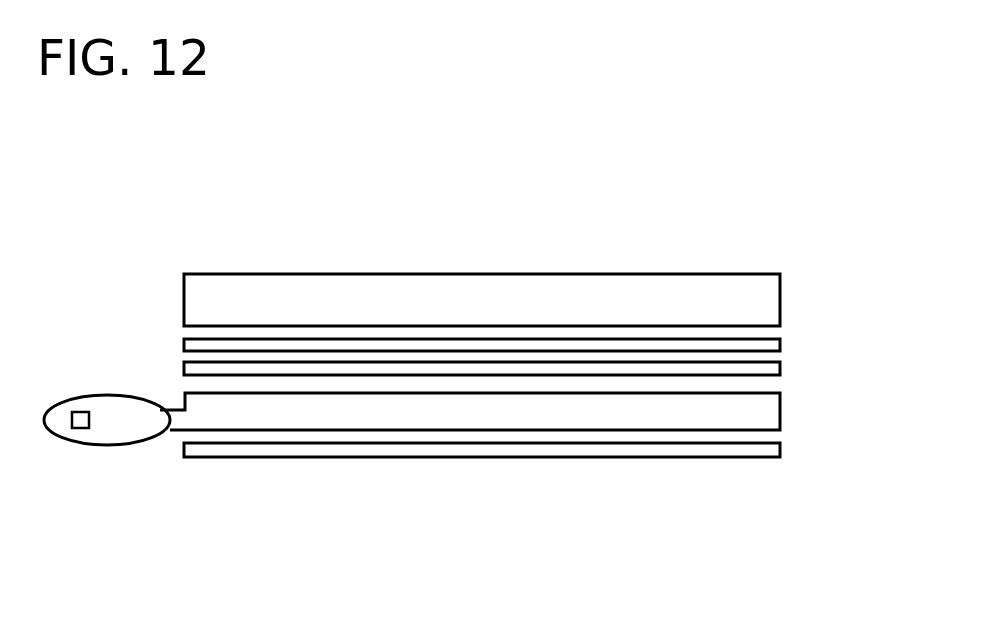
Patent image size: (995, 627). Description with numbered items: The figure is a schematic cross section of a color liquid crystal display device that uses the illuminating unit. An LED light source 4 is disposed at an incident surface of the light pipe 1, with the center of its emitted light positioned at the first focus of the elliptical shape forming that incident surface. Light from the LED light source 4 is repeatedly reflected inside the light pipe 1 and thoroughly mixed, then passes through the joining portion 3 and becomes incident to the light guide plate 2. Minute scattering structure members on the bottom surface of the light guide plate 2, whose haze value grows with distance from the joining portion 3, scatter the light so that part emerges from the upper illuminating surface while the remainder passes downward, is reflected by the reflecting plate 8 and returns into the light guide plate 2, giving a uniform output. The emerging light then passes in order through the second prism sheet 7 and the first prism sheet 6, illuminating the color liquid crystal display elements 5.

The light pipe 1 is at (110, 400).
The light guide plate 2 is at (780, 417).
The joining portion 3 is at (172, 422).
The LED light source 4 is at (73, 426).
The color liquid crystal display elements 5 is at (640, 274).
The first prism sheet 6 is at (780, 345).
The second prism sheet 7 is at (780, 370).
The reflecting plate 8 is at (700, 455).